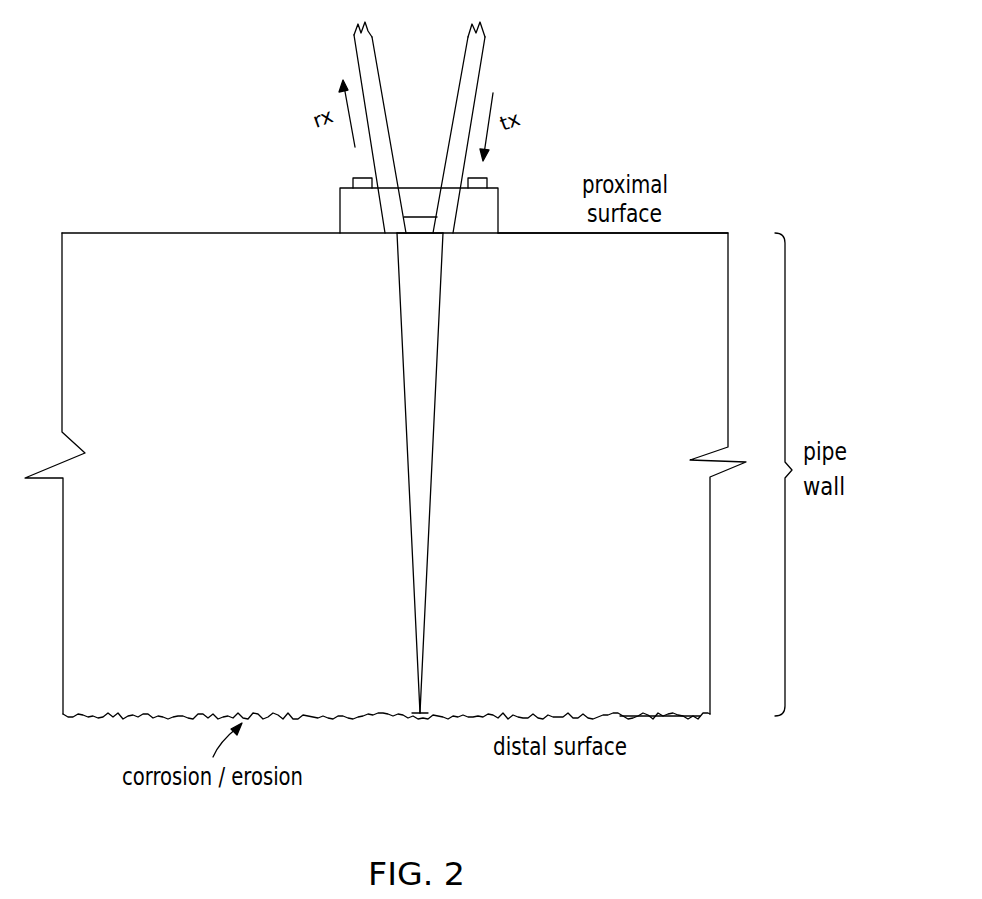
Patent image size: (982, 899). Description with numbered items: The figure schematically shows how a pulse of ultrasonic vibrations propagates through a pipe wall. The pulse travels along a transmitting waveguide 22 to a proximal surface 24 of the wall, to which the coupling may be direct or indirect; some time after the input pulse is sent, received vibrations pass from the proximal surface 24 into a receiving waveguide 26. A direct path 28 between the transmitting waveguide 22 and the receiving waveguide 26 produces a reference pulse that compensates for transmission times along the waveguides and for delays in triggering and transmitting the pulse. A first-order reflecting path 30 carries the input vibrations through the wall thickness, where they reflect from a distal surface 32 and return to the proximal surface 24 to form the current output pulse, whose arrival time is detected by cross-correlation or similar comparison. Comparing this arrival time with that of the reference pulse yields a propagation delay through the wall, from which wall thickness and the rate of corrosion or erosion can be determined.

The transmitting waveguide 22 is at (488, 63).
The proximal surface 24 is at (545, 232).
The receiving waveguide 26 is at (380, 67).
The direct path 28 is at (415, 243).
The first-order reflecting path 30 is at (427, 597).
The distal surface 32 is at (657, 718).